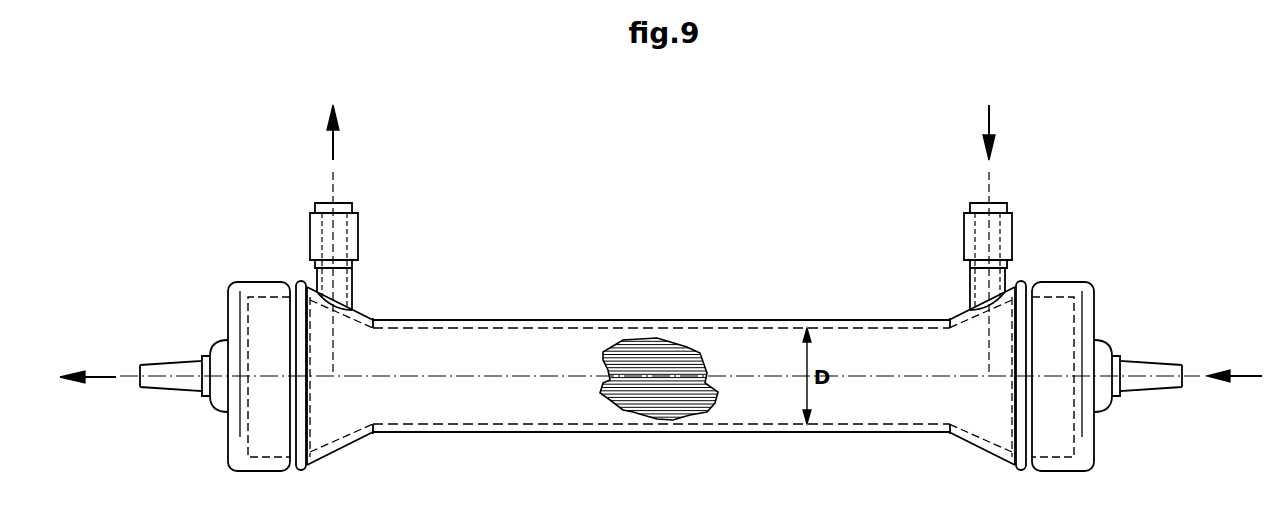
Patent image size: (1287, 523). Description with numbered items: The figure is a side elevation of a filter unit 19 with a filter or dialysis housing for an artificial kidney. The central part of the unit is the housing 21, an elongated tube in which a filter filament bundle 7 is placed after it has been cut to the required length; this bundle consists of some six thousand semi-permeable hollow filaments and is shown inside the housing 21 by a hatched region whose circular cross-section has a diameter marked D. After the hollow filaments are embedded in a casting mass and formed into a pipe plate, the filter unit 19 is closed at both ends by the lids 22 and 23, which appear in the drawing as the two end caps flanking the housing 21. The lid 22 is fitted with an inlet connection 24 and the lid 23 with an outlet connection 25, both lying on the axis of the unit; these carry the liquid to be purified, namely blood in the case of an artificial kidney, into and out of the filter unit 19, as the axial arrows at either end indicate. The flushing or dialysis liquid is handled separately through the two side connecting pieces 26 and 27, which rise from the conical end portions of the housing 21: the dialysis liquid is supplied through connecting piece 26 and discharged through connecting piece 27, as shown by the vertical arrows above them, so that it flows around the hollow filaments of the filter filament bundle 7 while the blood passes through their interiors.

The filter filament bundle 7 is at (638, 360).
The filter unit 19 is at (465, 320).
The housing 21 is at (838, 326).
The lid 22 is at (1079, 291).
The lid 23 is at (242, 291).
The inlet connection 24 is at (1144, 372).
The outlet connection 25 is at (174, 372).
The connecting piece 26 is at (1008, 237).
The connecting piece 27 is at (352, 237).